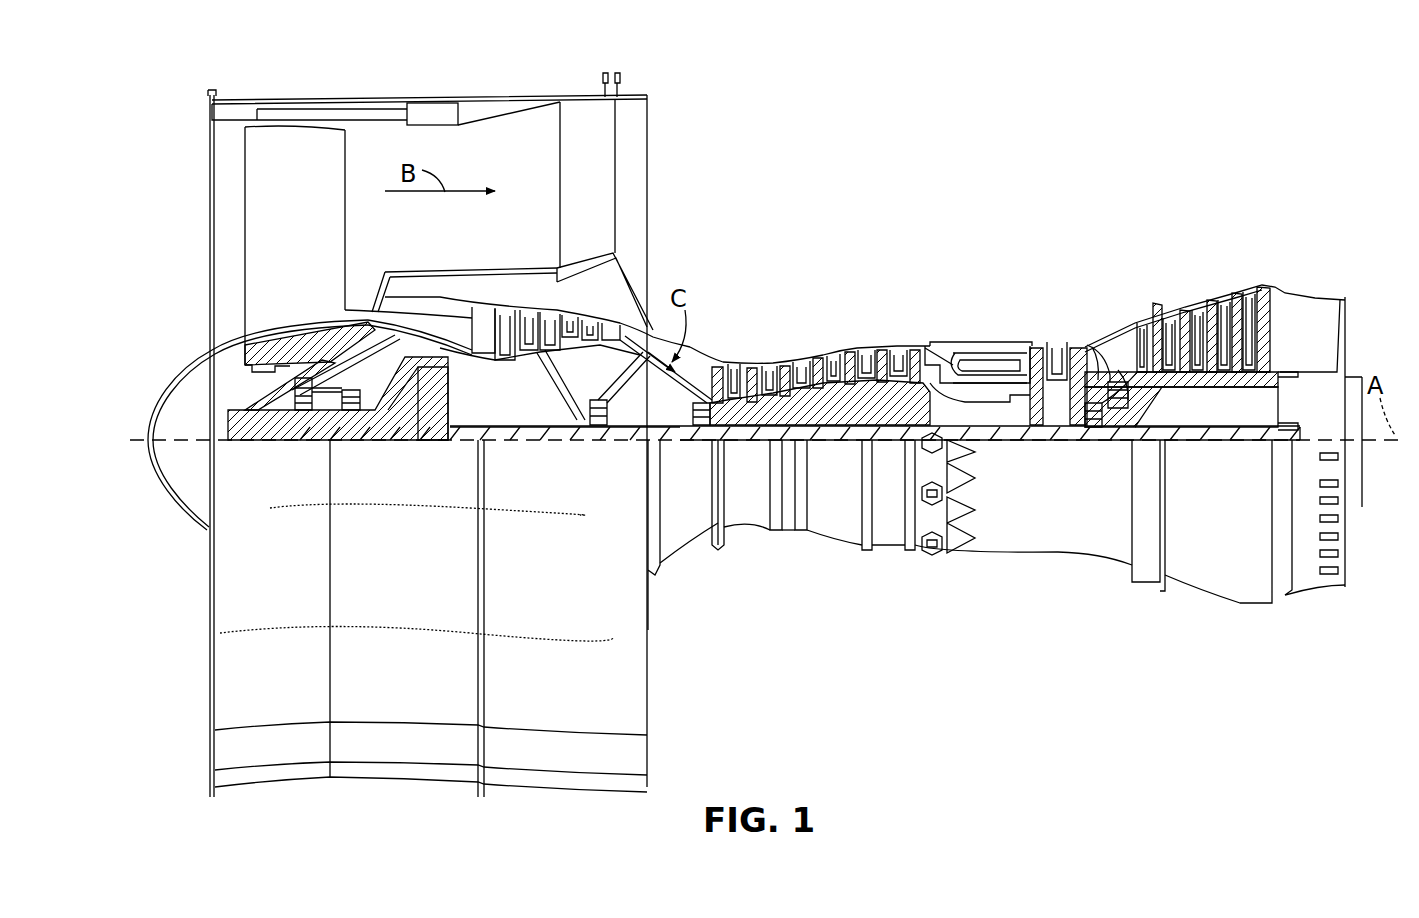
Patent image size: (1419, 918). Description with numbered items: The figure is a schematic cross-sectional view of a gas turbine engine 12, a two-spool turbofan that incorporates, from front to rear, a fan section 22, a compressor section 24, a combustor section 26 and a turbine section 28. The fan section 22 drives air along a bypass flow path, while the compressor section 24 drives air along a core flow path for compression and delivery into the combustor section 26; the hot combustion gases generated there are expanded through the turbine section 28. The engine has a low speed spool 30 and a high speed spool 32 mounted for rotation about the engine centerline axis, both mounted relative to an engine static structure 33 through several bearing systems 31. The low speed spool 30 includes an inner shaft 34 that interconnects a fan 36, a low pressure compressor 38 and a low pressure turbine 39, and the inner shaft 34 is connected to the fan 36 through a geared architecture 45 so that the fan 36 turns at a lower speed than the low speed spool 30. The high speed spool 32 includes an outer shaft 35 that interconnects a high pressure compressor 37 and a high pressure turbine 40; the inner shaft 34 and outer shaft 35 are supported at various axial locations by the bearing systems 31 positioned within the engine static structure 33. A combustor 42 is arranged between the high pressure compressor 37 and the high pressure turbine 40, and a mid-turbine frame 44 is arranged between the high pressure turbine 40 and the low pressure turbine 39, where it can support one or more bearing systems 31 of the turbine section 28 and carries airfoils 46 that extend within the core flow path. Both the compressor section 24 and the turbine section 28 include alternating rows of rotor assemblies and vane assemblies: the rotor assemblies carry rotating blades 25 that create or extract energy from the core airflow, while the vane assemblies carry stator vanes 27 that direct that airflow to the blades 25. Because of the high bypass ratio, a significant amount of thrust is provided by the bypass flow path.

The gas turbine engine 12 is at (1122, 142).
The fan section 22 is at (305, 88).
The compressor section 24 is at (702, 340).
The rotating blades 25 is at (507, 325).
The combustor section 26 is at (985, 338).
The stator vanes 27 is at (530, 352).
The turbine section 28 is at (1185, 226).
The low speed spool 30 is at (845, 447).
The bearing systems 31 is at (320, 412).
The high speed spool 32 is at (880, 405).
The engine static structure 33 is at (886, 552).
The inner shaft 34 is at (672, 445).
The outer shaft 35 is at (1010, 430).
The fan 36 is at (309, 219).
The high pressure compressor 37 is at (805, 395).
The low pressure compressor 38 is at (565, 325).
The low pressure turbine 39 is at (1212, 330).
The high pressure turbine 40 is at (1036, 346).
The combustor 42 is at (955, 355).
The mid-turbine frame 44 is at (1105, 334).
The geared architecture 45 is at (438, 420).
The airfoils 46 is at (1100, 380).